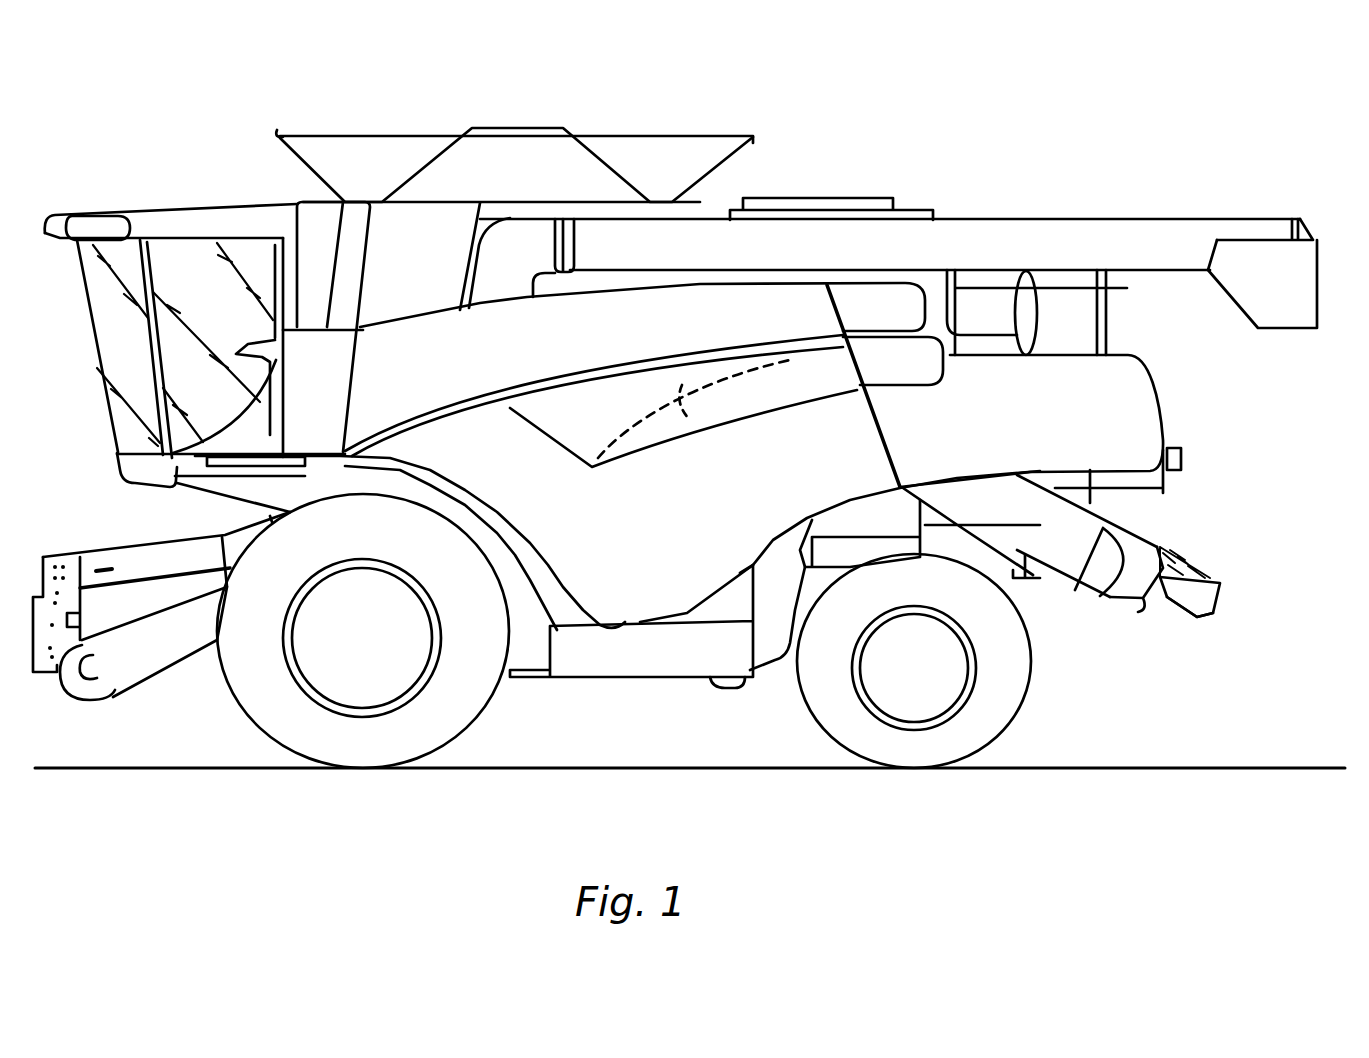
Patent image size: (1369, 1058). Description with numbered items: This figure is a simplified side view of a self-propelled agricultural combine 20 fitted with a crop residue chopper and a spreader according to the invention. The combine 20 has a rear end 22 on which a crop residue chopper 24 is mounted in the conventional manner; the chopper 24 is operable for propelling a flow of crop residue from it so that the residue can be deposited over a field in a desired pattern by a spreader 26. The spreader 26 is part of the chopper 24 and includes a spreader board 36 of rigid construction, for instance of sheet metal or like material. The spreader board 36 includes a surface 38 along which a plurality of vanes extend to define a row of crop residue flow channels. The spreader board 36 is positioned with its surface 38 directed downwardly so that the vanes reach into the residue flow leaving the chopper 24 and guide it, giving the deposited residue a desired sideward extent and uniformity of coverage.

The self-propelled agricultural combine 20 is at (1183, 123).
The rear end 22 is at (1163, 432).
The crop residue chopper 24 is at (1147, 527).
The spreader 26 is at (1243, 585).
The spreader board 36 is at (1217, 583).
The surface 38 is at (1203, 618).